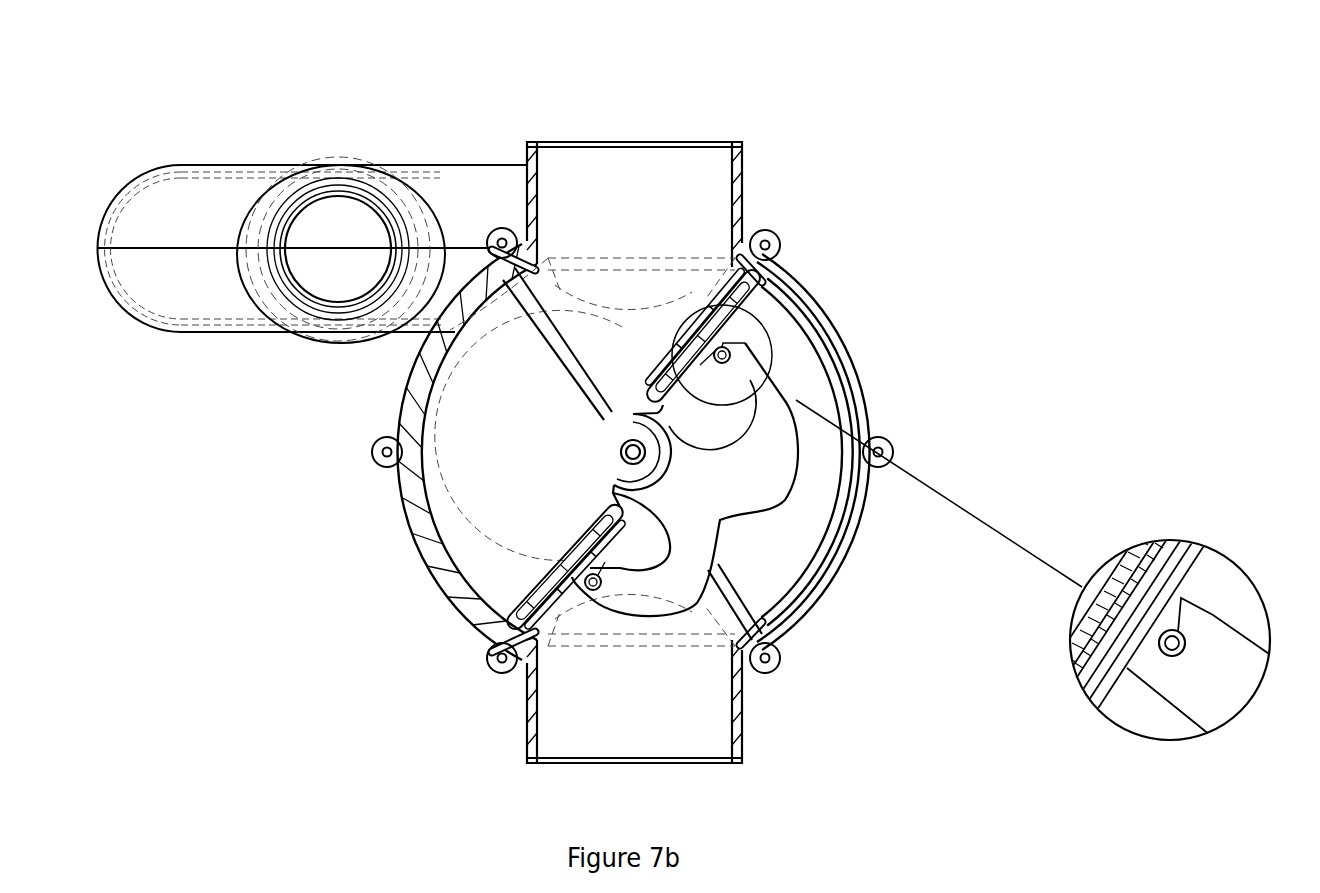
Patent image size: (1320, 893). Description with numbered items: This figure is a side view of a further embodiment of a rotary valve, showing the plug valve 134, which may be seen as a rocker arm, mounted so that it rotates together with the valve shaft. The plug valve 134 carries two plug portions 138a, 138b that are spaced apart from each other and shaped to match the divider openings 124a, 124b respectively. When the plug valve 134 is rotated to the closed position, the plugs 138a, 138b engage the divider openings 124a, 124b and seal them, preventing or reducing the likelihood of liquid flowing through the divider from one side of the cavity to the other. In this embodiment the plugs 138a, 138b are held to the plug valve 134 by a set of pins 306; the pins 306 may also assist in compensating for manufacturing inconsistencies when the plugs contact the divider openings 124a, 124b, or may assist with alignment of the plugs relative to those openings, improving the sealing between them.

The divider opening 124a is at (720, 292).
The plug portion 138a is at (712, 308).
The plug valve 134 is at (778, 418).
The pins 306 is at (1160, 634).
The divider opening 124b is at (582, 518).
The plug portion 138b is at (546, 562).